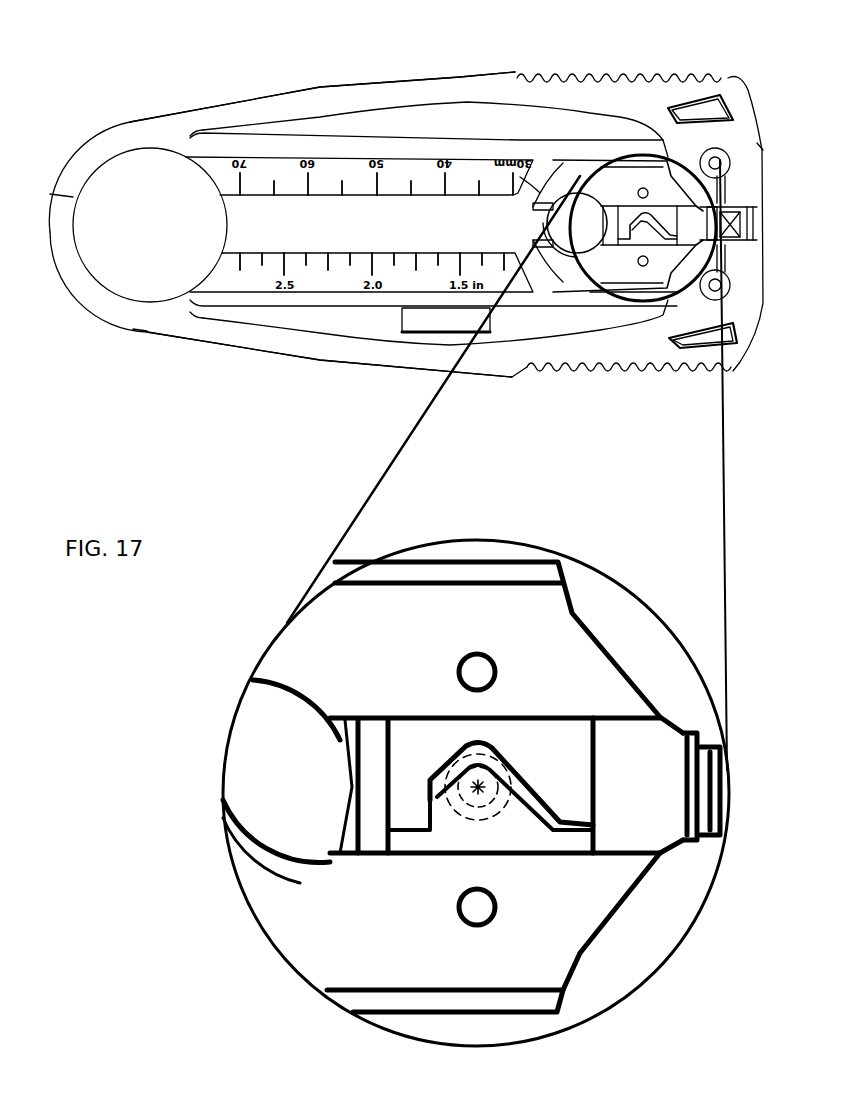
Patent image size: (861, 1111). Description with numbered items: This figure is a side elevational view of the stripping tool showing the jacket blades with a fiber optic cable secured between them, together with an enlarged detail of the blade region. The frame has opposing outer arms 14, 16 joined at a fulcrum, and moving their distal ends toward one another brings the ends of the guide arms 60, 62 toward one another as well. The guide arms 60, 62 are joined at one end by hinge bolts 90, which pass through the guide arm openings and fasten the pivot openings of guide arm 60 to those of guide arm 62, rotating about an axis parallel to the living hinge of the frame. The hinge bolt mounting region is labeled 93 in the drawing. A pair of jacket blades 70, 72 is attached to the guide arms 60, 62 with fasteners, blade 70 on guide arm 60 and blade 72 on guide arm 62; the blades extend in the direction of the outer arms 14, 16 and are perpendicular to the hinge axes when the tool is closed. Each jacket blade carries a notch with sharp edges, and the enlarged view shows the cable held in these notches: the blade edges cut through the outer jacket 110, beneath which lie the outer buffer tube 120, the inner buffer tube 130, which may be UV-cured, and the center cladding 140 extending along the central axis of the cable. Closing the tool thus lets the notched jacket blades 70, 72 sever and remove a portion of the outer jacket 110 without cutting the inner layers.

The outer arm 14 is at (360, 352).
The outer arm 16 is at (422, 90).
The guide arm 60 is at (575, 277).
The guide arm 62 is at (610, 187).
The jacket blade 70 is at (567, 843).
The jacket blade 72 is at (573, 748).
The hinge bolt 90 is at (565, 245).
The wheel mount 93 is at (533, 237).
The outer jacket 110 is at (503, 813).
The outer buffer tube 120 is at (505, 760).
The inner buffer tube 130 is at (470, 795).
The center cladding 140 is at (475, 790).